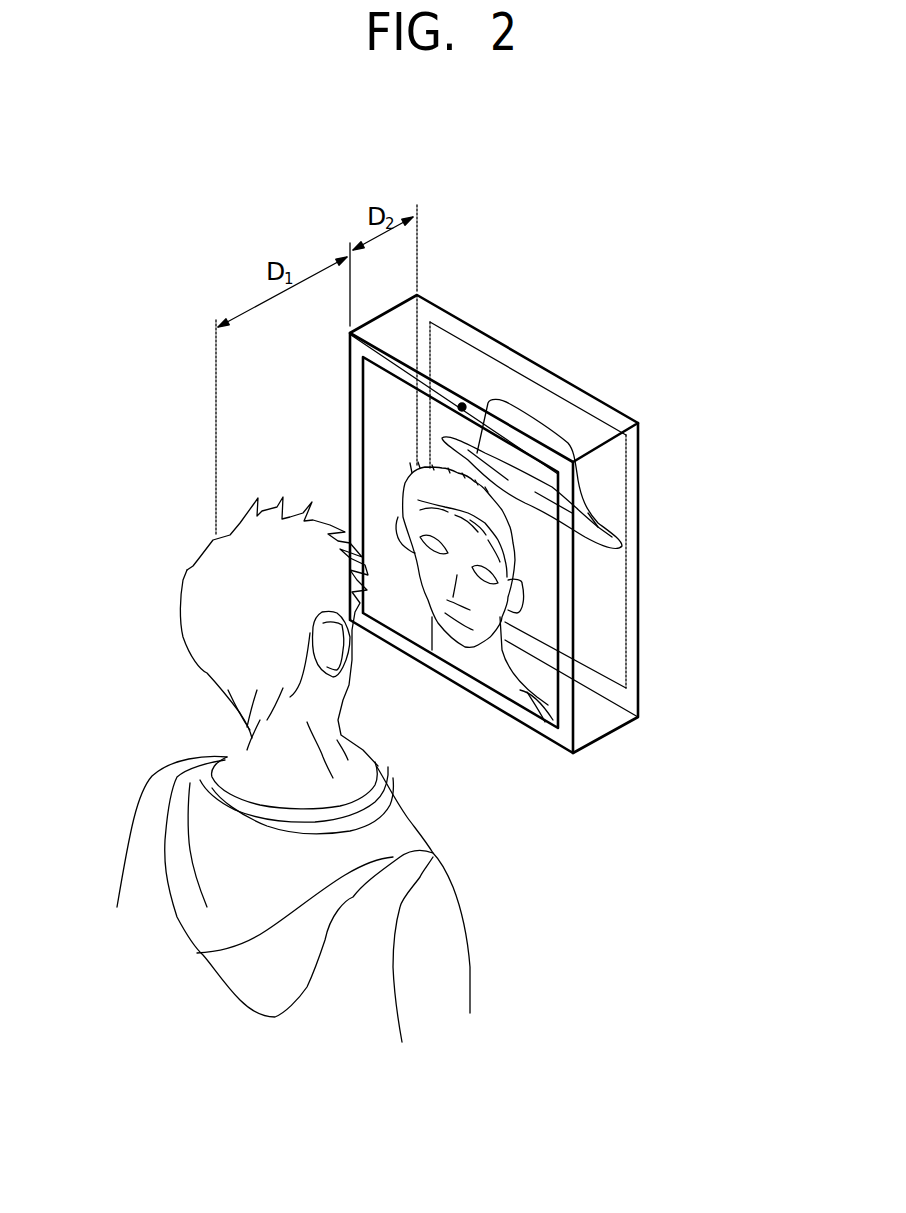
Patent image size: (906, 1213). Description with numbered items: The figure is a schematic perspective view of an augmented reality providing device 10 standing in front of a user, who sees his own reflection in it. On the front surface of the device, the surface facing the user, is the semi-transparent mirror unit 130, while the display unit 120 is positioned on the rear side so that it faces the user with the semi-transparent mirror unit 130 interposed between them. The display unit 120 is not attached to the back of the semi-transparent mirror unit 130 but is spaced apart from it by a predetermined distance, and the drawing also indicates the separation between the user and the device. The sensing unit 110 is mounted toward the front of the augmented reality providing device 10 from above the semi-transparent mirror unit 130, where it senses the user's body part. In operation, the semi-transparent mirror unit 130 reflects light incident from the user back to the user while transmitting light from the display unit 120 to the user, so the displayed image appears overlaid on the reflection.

The augmented reality providing device 10 is at (657, 402).
The sensing unit 110 is at (458, 405).
The display unit 120 is at (567, 397).
The semi-transparent mirror unit 130 is at (378, 433).